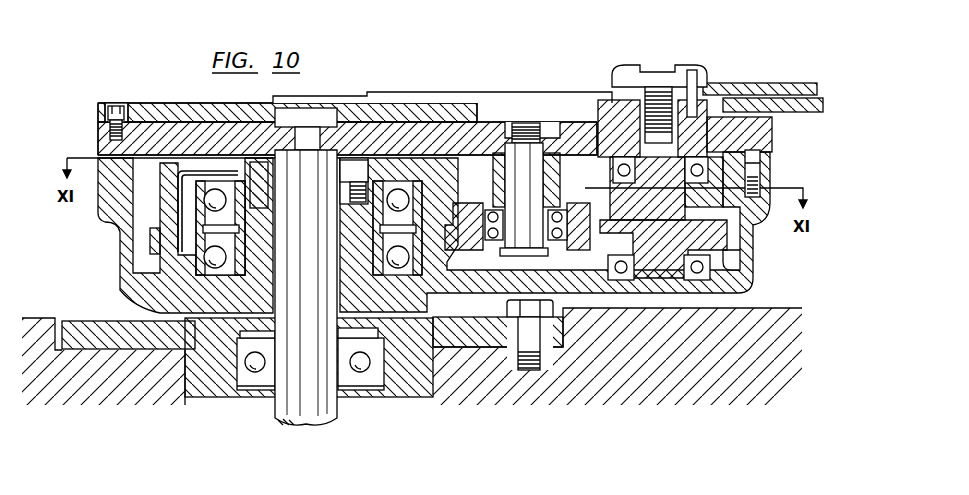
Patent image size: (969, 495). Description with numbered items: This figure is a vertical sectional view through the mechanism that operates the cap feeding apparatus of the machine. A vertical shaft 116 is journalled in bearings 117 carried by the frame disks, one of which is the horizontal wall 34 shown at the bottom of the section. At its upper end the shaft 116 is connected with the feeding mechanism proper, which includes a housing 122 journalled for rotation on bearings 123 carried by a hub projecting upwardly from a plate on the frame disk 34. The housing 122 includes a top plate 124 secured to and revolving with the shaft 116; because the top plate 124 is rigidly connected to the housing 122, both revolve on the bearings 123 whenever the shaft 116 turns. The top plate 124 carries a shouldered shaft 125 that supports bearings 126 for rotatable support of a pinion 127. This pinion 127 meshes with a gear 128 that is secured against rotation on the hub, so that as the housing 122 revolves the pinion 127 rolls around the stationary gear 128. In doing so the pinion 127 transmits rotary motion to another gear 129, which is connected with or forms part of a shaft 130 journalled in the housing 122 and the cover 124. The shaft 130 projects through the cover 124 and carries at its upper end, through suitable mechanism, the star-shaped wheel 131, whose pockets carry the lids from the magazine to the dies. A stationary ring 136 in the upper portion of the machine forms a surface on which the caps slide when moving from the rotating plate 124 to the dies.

The horizontal wall 34 is at (55, 318).
The shaft 116 is at (339, 407).
The bearings 117 is at (233, 390).
The housing 122 is at (750, 283).
The bearings 123 is at (228, 256).
The top plate 124 is at (99, 147).
The shouldered shaft 125 is at (539, 223).
The bearings 126 is at (563, 250).
The pinion 127 is at (470, 250).
The gear 128 is at (160, 239).
The gear 129 is at (671, 245).
The shaft 130 is at (671, 209).
The star-shaped wheel 131 is at (443, 94).
The stationary ring 136 is at (792, 110).